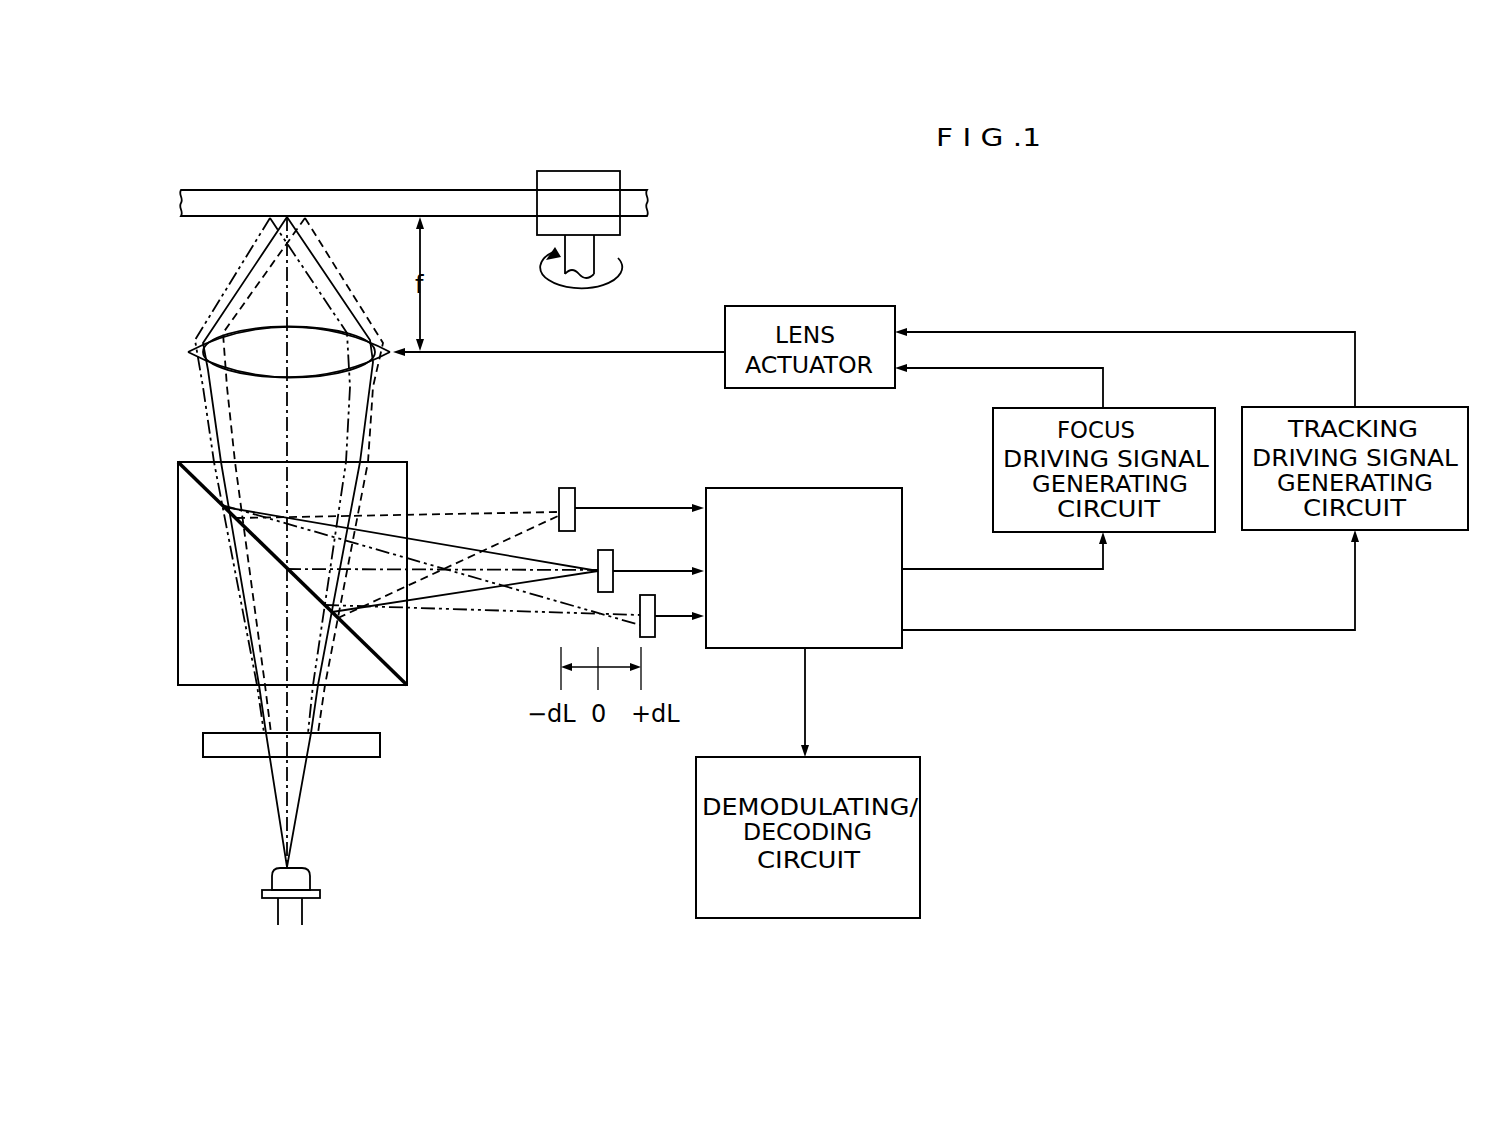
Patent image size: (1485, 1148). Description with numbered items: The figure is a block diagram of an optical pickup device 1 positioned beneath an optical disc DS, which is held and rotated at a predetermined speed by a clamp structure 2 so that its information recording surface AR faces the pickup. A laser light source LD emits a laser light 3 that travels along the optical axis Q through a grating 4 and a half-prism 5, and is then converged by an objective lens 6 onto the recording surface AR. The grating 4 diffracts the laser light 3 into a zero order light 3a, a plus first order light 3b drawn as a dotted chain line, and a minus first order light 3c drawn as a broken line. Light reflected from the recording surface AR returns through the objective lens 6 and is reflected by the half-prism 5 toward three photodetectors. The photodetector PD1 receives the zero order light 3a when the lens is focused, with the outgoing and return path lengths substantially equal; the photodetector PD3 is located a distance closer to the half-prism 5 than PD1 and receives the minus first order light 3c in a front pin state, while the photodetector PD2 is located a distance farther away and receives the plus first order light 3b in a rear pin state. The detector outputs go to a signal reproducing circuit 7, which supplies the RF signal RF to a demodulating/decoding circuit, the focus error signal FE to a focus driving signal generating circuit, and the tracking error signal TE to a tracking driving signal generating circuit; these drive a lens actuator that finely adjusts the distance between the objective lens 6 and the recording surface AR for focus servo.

The optical pickup device 1 is at (547, 475).
The clamp structure 2 is at (614, 149).
The laser light 3 is at (285, 789).
The zero order laser light 3a is at (205, 390).
The plus first order light 3b is at (208, 437).
The minus first order light 3c is at (378, 429).
The grating 4 is at (203, 746).
The half-prism 5 is at (222, 672).
The objective lens 6 is at (193, 346).
The signal reproducing circuit 7 is at (813, 488).
The optical disc DS is at (423, 193).
The information recording surface AR is at (197, 219).
The optical axis Q is at (290, 404).
The laser light source LD is at (272, 880).
The photodetector PD1 is at (614, 561).
The photodetector PD2 is at (655, 632).
The photodetector PD3 is at (576, 500).
The focus error signal FE is at (1025, 550).
The tracking error signal TE is at (1152, 580).
The RF signal RF is at (827, 702).